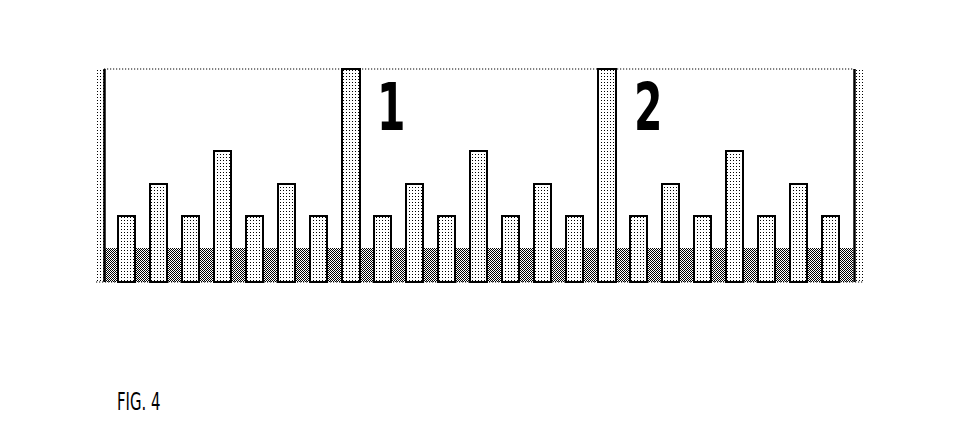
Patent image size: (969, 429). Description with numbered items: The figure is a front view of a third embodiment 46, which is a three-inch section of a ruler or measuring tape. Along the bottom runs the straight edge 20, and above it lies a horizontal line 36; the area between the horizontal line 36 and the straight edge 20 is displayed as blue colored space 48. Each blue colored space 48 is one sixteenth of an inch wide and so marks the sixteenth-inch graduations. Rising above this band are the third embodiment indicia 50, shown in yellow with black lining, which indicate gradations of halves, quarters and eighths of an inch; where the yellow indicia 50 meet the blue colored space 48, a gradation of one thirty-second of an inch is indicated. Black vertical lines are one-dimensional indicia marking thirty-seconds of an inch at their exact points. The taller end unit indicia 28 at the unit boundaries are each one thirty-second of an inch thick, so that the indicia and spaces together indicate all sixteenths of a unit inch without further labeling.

The straight edge 20 is at (112, 285).
The end unit indicia 28 is at (108, 58).
The horizontal line 36 is at (148, 239).
The third embodiment 46 is at (896, 135).
The blue colored space 48 is at (849, 262).
The third embodiment indicia 50 is at (733, 167).